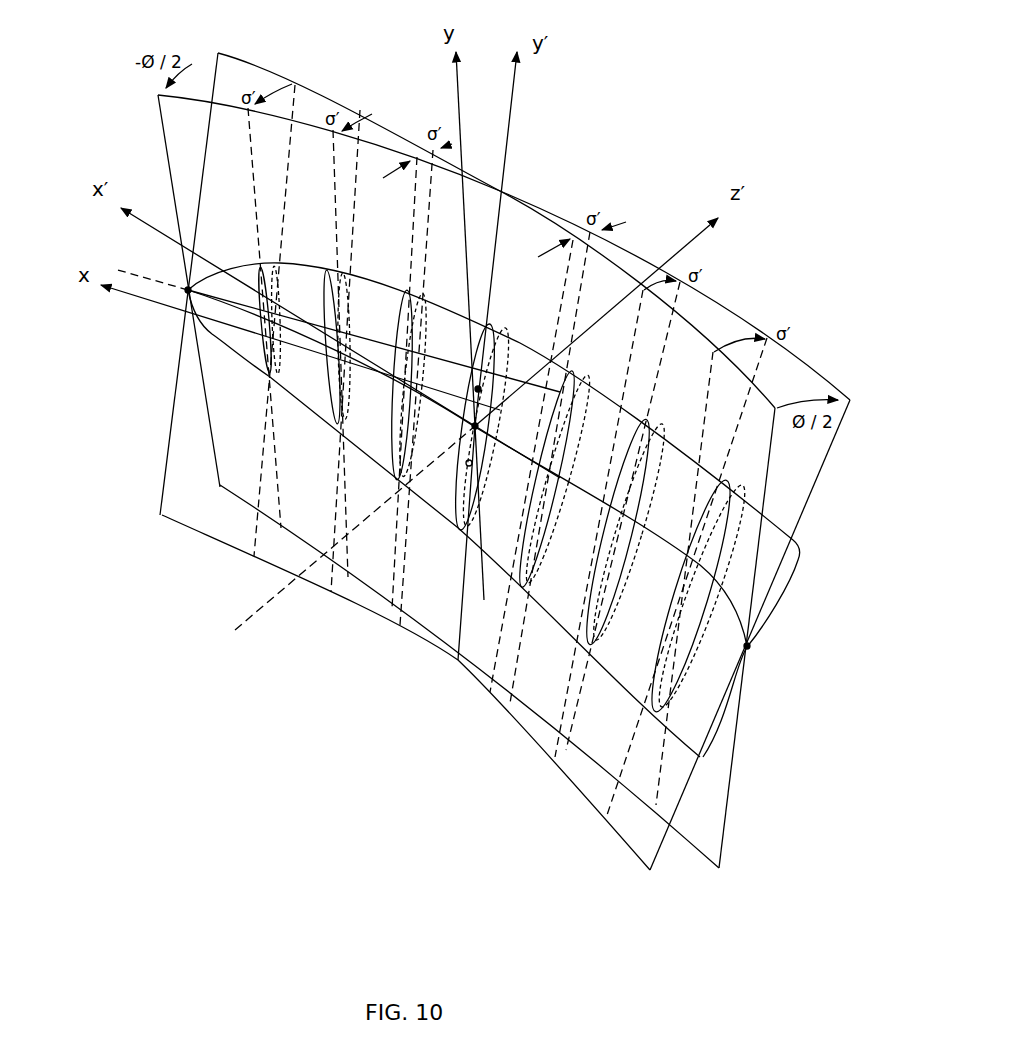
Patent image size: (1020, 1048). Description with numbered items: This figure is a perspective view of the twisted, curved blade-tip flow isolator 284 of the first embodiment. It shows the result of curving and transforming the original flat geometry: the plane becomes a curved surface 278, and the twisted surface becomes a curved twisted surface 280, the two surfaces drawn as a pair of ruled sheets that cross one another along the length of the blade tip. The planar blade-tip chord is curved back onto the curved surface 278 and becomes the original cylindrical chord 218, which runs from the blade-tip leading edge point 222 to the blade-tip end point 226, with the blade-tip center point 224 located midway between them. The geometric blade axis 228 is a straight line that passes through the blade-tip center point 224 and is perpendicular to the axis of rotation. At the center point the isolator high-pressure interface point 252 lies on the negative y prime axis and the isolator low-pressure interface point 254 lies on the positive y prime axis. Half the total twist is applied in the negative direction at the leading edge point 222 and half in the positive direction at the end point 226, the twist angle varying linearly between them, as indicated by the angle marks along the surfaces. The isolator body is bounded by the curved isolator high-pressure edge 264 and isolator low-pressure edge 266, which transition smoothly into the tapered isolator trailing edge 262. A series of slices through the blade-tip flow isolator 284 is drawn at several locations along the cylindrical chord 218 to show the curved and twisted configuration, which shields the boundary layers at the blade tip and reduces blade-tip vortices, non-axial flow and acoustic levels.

The cylindrical blade-tip chord 218 is at (228, 308).
The blade-tip leading edge point 222 is at (187, 282).
The blade-tip center point 224 is at (479, 426).
The blade-tip end point 226 is at (747, 648).
The geometric blade axis 228 is at (247, 615).
The isolator high-pressure interface point 252 is at (469, 466).
The isolator low-pressure interface point 254 is at (481, 389).
The isolator trailing edge 262 is at (787, 597).
The isolator high-pressure edge 264 is at (412, 620).
The isolator low-pressure edge 266 is at (437, 345).
The curved surface 278 is at (333, 97).
The curved twisted surface 280 is at (157, 128).
The blade-tip flow isolator 284 is at (457, 322).